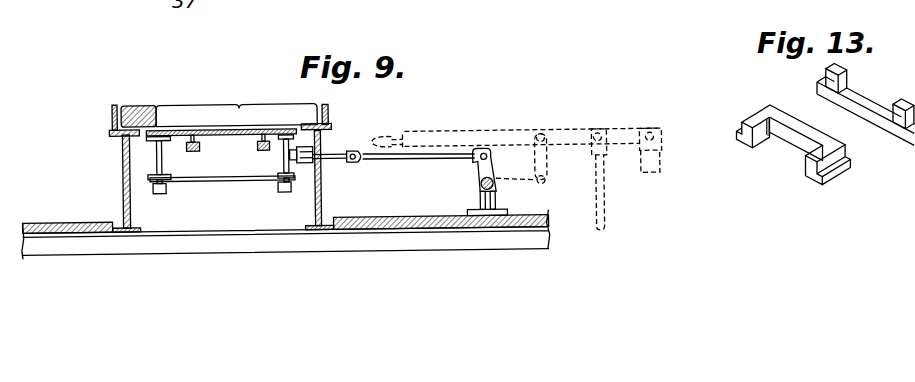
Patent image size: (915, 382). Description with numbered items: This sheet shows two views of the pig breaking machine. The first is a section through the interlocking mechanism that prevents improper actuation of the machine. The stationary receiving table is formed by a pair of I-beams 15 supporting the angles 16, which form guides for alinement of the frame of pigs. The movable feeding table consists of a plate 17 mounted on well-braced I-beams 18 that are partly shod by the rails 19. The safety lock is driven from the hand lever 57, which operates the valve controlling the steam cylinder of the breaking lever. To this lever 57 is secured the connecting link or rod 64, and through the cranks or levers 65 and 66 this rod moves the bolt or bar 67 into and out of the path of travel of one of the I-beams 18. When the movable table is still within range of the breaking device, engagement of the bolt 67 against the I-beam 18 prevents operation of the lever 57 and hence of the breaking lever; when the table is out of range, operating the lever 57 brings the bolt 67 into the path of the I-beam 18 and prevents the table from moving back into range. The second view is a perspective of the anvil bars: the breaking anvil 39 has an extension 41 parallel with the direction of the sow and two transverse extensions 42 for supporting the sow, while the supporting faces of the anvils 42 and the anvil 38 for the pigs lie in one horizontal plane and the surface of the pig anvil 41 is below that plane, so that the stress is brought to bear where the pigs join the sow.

In FIG. 9, the I-beams 15 is at (122, 172).
In FIG. 9, the angles 16 is at (114, 112).
In FIG. 9, the plate 17 is at (223, 135).
In FIG. 9, the I-beams 18 is at (157, 158).
In FIG. 9, the rails 19 is at (163, 193).
In FIG. 9, the hand lever 57 is at (461, 137).
In FIG. 9, the connecting link or rod 64 is at (546, 168).
In FIG. 9, the crank or lever 65 is at (526, 182).
In FIG. 9, the crank or lever 66 is at (484, 175).
In FIG. 9, the bolt or bar 67 is at (333, 158).
In FIG. 13, the anvil for the pigs 38 is at (794, 145).
In FIG. 13, the breaking anvil 39 is at (866, 105).
In FIG. 13, the extension (pig anvil) 41 is at (858, 104).
In FIG. 13, the transverse extensions 42 is at (849, 68).